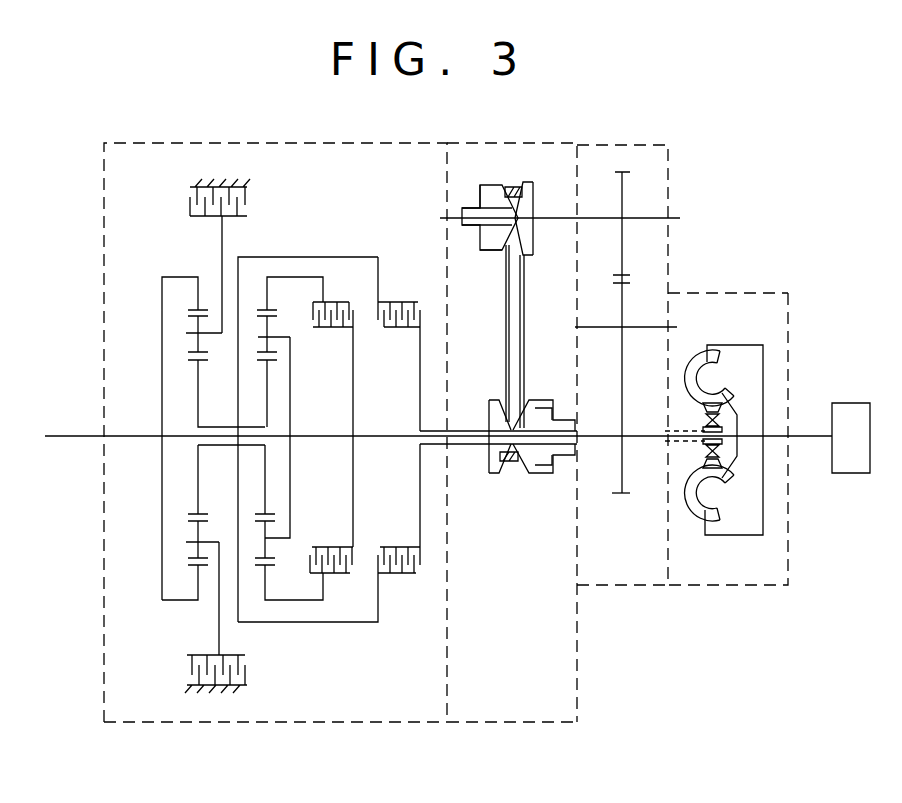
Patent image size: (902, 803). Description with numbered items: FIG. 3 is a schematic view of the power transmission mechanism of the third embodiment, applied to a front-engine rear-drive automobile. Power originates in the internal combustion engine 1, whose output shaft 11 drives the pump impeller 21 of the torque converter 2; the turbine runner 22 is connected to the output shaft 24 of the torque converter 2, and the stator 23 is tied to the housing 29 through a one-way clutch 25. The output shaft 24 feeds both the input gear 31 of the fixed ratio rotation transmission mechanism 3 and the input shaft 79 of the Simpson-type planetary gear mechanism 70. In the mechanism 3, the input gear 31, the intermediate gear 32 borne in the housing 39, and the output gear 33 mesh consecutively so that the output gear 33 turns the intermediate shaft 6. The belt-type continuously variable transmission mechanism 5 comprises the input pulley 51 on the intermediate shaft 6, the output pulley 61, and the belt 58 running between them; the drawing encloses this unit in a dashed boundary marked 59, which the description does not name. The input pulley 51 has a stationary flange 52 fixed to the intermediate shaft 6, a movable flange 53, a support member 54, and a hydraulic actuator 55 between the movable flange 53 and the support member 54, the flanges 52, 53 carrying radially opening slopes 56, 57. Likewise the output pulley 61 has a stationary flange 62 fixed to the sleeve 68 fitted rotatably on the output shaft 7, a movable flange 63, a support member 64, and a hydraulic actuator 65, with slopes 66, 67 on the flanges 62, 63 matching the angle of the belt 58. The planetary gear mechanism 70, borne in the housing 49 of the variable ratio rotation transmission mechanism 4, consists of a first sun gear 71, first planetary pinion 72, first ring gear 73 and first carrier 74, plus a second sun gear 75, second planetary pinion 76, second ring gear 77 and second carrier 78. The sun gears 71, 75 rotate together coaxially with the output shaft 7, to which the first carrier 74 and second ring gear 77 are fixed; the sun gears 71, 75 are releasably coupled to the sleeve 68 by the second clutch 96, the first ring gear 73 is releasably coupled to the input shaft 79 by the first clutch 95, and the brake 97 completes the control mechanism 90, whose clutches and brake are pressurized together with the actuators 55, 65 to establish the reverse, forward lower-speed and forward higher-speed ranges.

The internal combustion engine 1 is at (858, 402).
The torque converter 2 is at (762, 335).
The fixed ratio rotation transmission mechanism 3 is at (652, 205).
The variable ratio rotation transmission mechanism 4 is at (172, 183).
The belt-type continuously variable transmission mechanism 5 is at (558, 160).
The intermediate shaft 6 is at (600, 216).
The output shaft 7 is at (80, 438).
The output shaft of the internal combustion engine 11 is at (812, 442).
The pump impeller 21 is at (690, 358).
The turbine runner 22 is at (742, 388).
The stator 23 is at (722, 475).
The output shaft of the torque converter 24 is at (682, 430).
The one-way clutch 25 is at (705, 466).
The housing of the torque converter 29 is at (735, 293).
The input gear 31 is at (623, 488).
The intermediate gear 32 is at (624, 308).
The output gear 33 is at (624, 190).
The housing of the fixed ratio rotation transmission mechanism 39 is at (618, 588).
The housing of the variable ratio rotation transmission mechanism 49 is at (322, 725).
The input pulley 51 is at (485, 177).
The stationary flange 52 is at (531, 208).
The movable flange 53 is at (492, 253).
The support member 54 is at (480, 242).
The hydraulic actuator 55 is at (483, 200).
The slope 56 is at (525, 183).
The slope 57 is at (505, 185).
The belt 58 is at (533, 352).
The transmission housing 59 is at (490, 725).
The output pulley 61 is at (537, 478).
The stationary flange 62 is at (488, 423).
The movable flange 63 is at (538, 400).
The support member 64 is at (568, 457).
The hydraulic actuator 65 is at (550, 420).
The slope 66 is at (500, 470).
The slope 67 is at (524, 465).
The sleeve 68 is at (471, 446).
The Simpson-type planetary gear mechanism 70 is at (338, 252).
The first sun gear 71 is at (270, 362).
The first planetary pinion 72 is at (272, 318).
The first ring gear 73 is at (270, 308).
The first carrier 74 is at (291, 527).
The second sun gear 75 is at (196, 362).
The second planetary pinion 76 is at (196, 318).
The second ring gear 77 is at (196, 310).
The second carrier 78 is at (218, 606).
The input shaft of the planetary gear mechanism 79 is at (395, 430).
The control mechanism 90 is at (362, 640).
The first clutch 95 is at (352, 560).
The second clutch 96 is at (382, 573).
The brake 97 is at (252, 664).